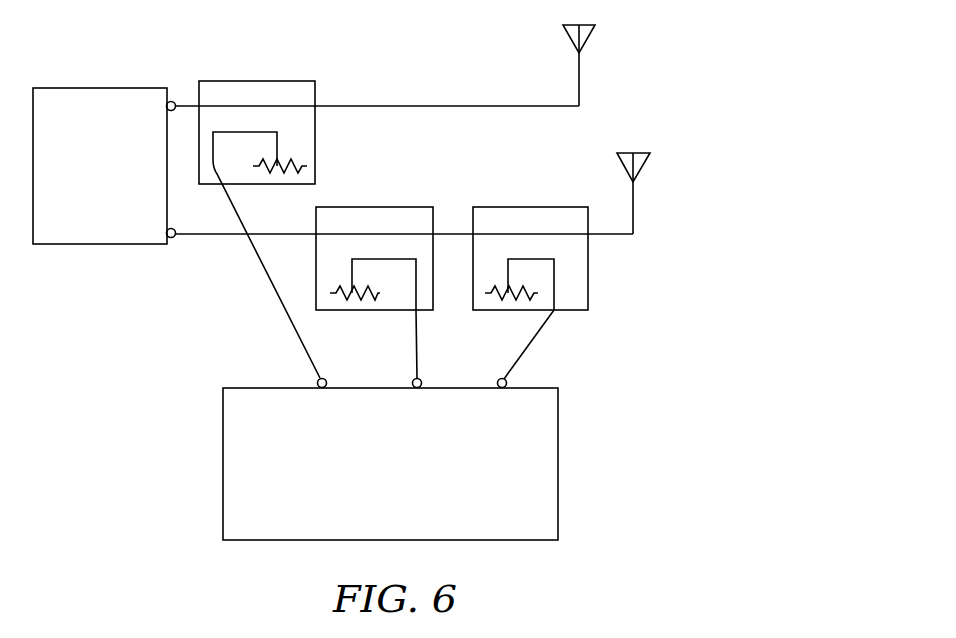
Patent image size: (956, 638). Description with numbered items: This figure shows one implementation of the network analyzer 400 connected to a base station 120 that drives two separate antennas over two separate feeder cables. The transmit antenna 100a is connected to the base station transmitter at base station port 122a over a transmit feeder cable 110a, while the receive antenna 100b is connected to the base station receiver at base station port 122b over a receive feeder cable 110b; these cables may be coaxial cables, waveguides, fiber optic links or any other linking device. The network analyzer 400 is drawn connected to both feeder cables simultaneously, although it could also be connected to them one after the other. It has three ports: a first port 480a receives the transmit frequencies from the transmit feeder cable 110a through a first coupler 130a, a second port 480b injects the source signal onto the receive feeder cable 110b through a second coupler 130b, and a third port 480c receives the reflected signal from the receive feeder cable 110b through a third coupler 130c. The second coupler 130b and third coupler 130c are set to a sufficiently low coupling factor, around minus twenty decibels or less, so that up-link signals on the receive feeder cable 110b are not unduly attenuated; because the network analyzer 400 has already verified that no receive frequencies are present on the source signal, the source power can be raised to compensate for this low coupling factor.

The base station 120 is at (117, 86).
The base station port 122a is at (172, 101).
The base station port 122b is at (174, 237).
The transmit feeder cable 110a is at (448, 105).
The receive feeder cable 110b is at (622, 235).
The transmit antenna 100a is at (590, 40).
The receive antenna 100b is at (645, 168).
The first coupler 130a is at (258, 80).
The second coupler 130b is at (378, 205).
The third coupler 130c is at (495, 205).
The first port 480a is at (317, 378).
The second port 480b is at (422, 380).
The third port 480c is at (506, 380).
The network analyzer 400 is at (558, 460).